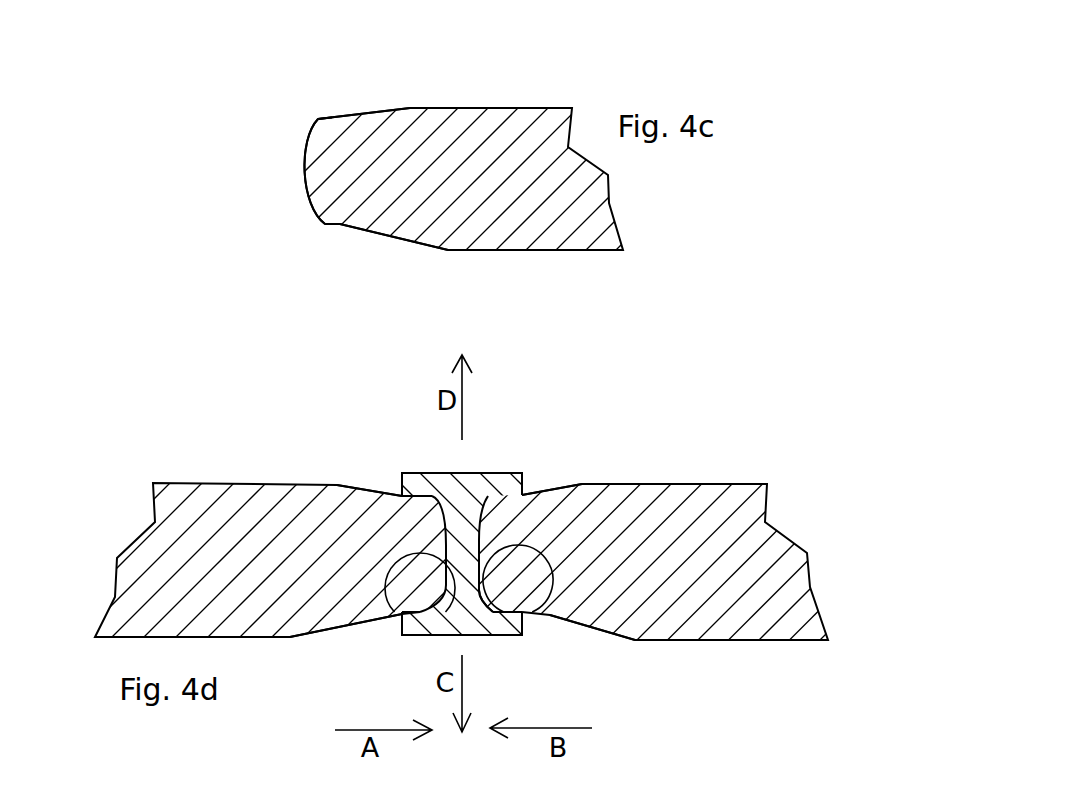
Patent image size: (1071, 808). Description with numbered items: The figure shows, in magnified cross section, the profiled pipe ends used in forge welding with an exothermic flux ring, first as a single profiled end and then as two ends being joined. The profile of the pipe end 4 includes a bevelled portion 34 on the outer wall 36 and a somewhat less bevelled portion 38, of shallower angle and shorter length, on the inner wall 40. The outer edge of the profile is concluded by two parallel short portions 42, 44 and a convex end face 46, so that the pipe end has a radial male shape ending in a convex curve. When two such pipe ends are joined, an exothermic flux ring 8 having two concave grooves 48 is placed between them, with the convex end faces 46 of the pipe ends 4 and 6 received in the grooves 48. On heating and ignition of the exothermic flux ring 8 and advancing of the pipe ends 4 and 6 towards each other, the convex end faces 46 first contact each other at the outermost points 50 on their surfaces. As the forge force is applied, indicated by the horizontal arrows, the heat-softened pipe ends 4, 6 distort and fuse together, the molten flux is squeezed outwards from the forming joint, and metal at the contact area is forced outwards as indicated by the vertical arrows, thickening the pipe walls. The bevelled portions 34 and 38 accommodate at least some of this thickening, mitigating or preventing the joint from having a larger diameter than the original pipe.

In FIG. 4c, the pipe end 4 is at (368, 130).
In FIG. 4d, the pipe end 4 is at (680, 483).
In FIG. 4d, the pipe end 6 is at (247, 483).
In FIG. 4d, the exothermic flux ring 8 is at (470, 473).
In FIG. 4c, the bevelled portion 34 is at (400, 238).
In FIG. 4d, the bevelled portion 34 is at (338, 630).
In FIG. 4c, the outer wall 36 is at (540, 250).
In FIG. 4c, the less bevelled portion 38 is at (380, 110).
In FIG. 4d, the less bevelled portion 38 is at (373, 491).
In FIG. 4c, the inner wall 40 is at (493, 108).
In FIG. 4c, the short parallel portion 42 is at (328, 117).
In FIG. 4c, the short parallel portion 44 is at (342, 224).
In FIG. 4c, the convex end face 46 is at (306, 168).
In FIG. 4d, the convex end face 46 is at (446, 510).
In FIG. 4d, the concave groove 48 is at (407, 473).
In FIG. 4d, the outermost point 50 is at (392, 612).